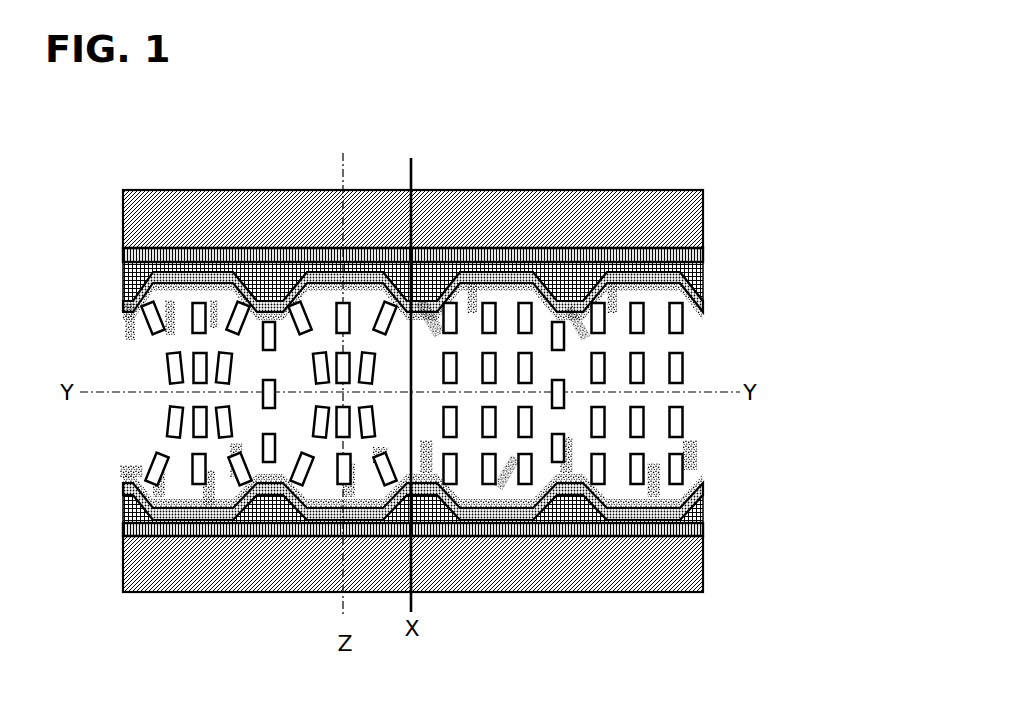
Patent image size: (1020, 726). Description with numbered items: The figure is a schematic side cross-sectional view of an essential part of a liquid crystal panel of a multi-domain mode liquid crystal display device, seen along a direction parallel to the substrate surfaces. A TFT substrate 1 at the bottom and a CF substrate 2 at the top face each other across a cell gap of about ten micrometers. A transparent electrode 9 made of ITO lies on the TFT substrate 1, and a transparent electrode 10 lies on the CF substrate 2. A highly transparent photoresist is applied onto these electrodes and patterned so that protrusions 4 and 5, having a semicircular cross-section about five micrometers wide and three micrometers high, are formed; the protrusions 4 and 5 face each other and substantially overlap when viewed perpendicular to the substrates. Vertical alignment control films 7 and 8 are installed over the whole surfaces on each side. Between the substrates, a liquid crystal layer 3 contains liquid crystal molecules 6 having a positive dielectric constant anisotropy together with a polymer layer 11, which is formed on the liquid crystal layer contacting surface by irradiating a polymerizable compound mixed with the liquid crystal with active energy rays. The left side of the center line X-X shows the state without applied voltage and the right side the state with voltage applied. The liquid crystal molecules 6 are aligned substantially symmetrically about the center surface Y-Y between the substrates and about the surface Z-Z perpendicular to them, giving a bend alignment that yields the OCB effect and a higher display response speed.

The TFT substrate 1 is at (650, 563).
The CF substrate 2 is at (640, 212).
The liquid crystal layer 3 is at (693, 377).
The protrusion 4 is at (700, 502).
The protrusion 5 is at (703, 270).
The liquid crystal molecules 6 is at (307, 533).
The vertical alignment control film 7 is at (700, 480).
The vertical alignment control film 8 is at (703, 292).
The transparent electrode 9 is at (700, 522).
The transparent electrode 10 is at (683, 235).
The polymer layer 11 is at (703, 310).